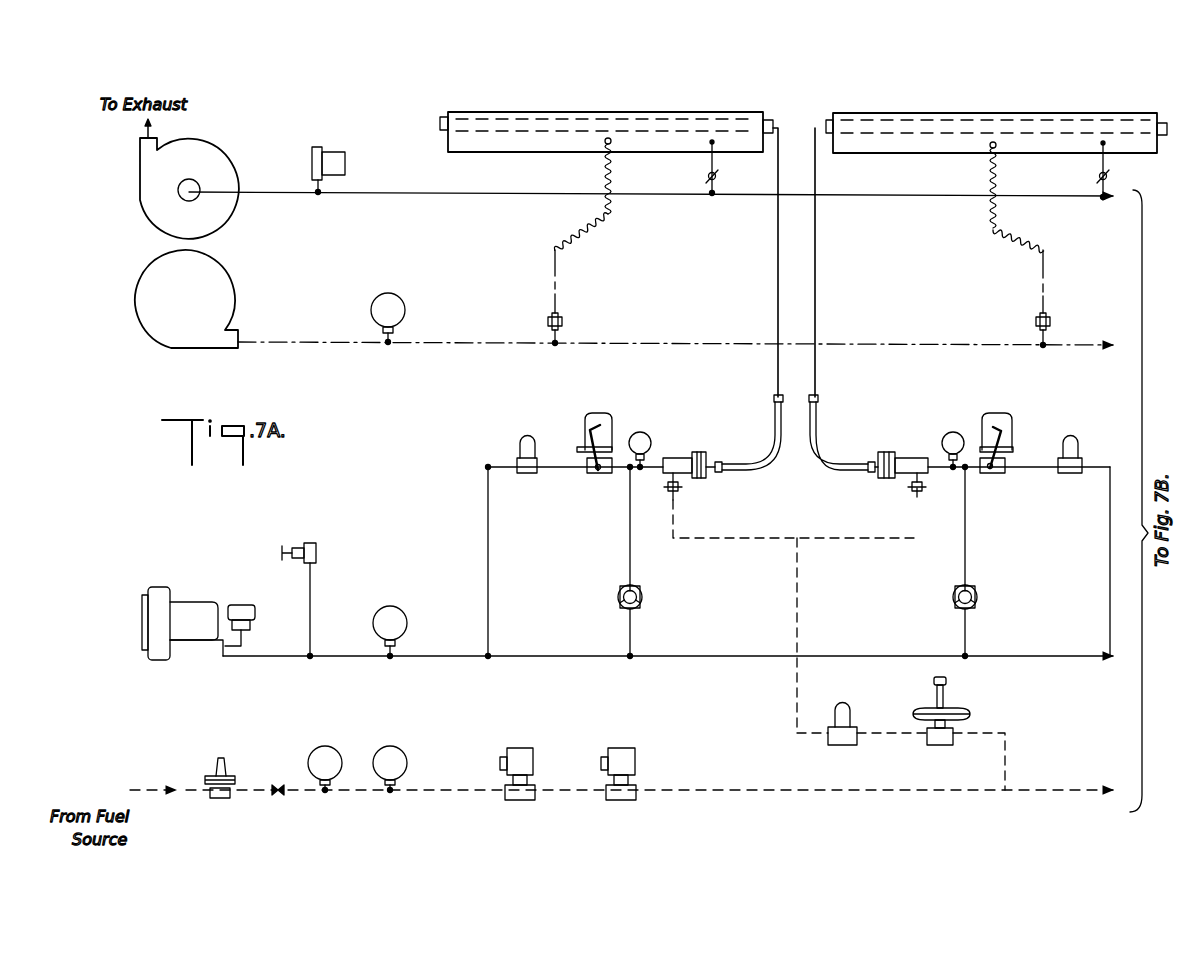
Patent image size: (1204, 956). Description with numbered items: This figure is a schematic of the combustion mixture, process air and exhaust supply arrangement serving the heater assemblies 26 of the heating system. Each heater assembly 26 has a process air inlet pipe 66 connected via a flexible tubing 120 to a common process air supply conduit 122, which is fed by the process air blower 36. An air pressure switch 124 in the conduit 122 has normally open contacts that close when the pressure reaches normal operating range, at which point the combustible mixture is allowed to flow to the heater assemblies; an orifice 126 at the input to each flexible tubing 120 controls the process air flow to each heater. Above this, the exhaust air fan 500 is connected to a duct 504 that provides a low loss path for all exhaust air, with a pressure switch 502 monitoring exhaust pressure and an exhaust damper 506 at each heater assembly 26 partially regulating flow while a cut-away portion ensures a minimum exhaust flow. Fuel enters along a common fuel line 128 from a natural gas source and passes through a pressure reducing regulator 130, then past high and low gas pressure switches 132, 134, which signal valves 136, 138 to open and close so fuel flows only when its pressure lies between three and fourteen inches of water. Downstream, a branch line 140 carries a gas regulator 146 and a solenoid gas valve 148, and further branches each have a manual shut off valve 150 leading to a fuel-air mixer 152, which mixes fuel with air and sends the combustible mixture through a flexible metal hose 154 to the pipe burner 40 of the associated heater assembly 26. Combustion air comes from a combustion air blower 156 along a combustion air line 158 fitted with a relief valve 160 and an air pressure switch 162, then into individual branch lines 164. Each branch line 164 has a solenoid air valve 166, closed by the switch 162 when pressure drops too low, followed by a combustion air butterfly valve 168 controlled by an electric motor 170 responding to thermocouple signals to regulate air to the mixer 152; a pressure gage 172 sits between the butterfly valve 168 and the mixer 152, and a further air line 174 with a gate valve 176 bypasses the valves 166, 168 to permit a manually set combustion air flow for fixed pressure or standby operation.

The heater assembly 26 is at (648, 112).
The process air blower 36 is at (226, 280).
The pipe burner 40 is at (778, 128).
The process air inlet pipe 66 is at (606, 144).
The flexible tubing 120 is at (612, 222).
The common process air supply conduit 122 is at (333, 345).
The air pressure switch 124 is at (406, 311).
The orifice 126 is at (593, 316).
The common fuel line 128 is at (368, 793).
The pressure reducing regulator 130 is at (231, 772).
The high gas pressure switch 132 is at (331, 740).
The low gas pressure switch 134 is at (415, 740).
The valve 136 is at (522, 749).
The valve 138 is at (631, 749).
The branch line 140 is at (1008, 749).
The gas regulator 146 is at (956, 707).
The solenoid gas valve 148 is at (855, 701).
The manual shut off valve 150 is at (681, 493).
The fuel-air mixer 152 is at (684, 458).
The flexible metal hose 154 is at (823, 460).
The combustion air blower 156 is at (186, 603).
The combustion air line 158 is at (346, 659).
The relief valve 160 is at (317, 553).
The air pressure switch 162 is at (391, 607).
The branch line 164 is at (490, 566).
The solenoid air valve 166 is at (520, 444).
The combustion air butterfly valve 168 is at (604, 473).
The electric motor 170 is at (598, 414).
The pressure gage 172 is at (641, 430).
The further air line 174 is at (628, 545).
The gate valve 176 is at (643, 598).
The exhaust air fan 500 is at (218, 165).
The pressure switch 502 is at (346, 160).
The duct 504 is at (403, 197).
The exhaust damper 506 is at (709, 177).